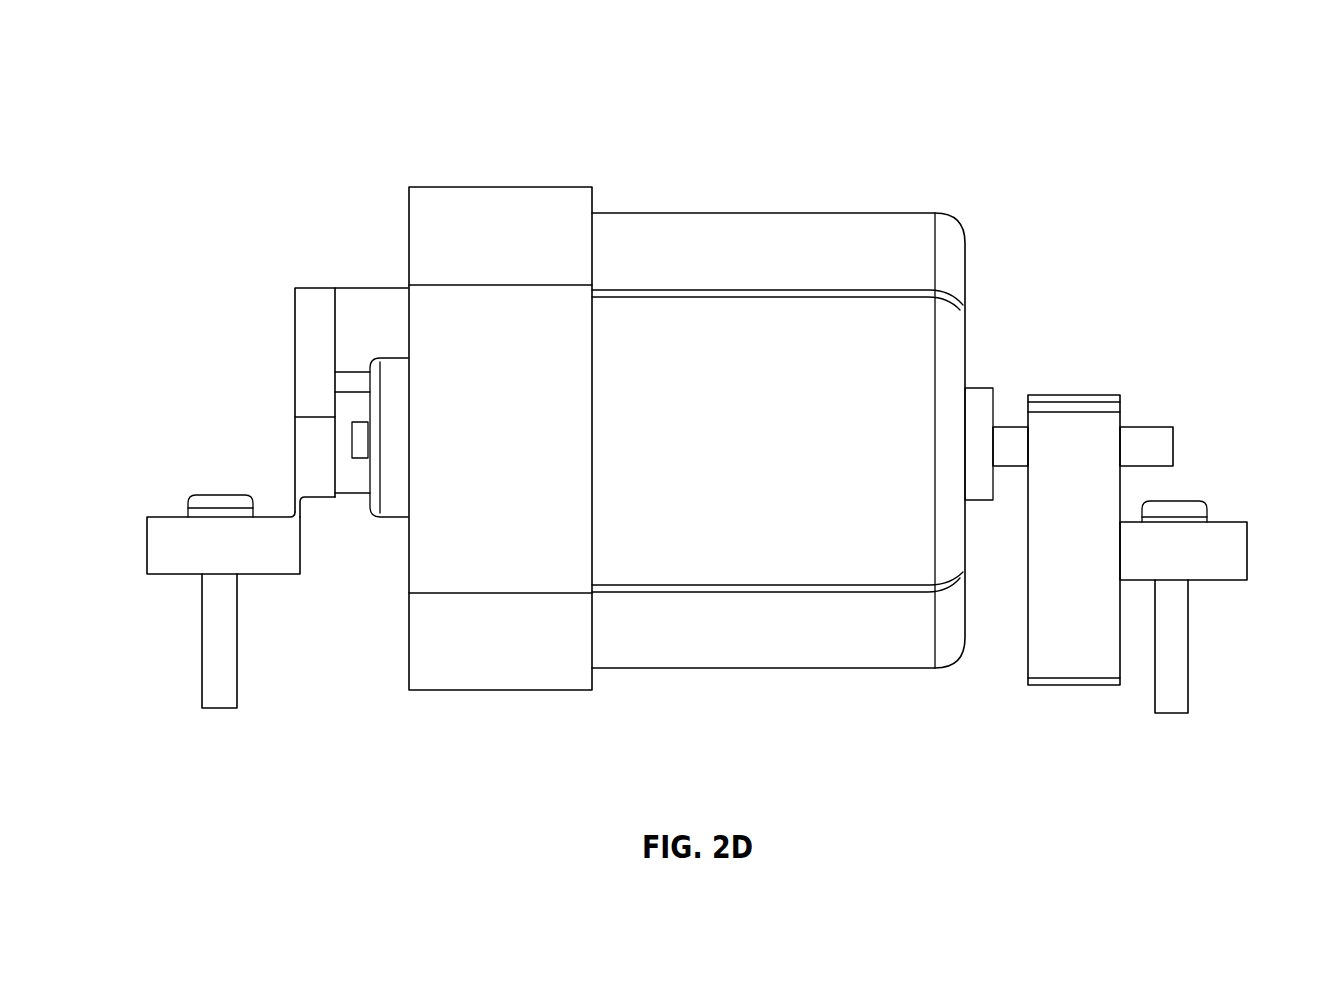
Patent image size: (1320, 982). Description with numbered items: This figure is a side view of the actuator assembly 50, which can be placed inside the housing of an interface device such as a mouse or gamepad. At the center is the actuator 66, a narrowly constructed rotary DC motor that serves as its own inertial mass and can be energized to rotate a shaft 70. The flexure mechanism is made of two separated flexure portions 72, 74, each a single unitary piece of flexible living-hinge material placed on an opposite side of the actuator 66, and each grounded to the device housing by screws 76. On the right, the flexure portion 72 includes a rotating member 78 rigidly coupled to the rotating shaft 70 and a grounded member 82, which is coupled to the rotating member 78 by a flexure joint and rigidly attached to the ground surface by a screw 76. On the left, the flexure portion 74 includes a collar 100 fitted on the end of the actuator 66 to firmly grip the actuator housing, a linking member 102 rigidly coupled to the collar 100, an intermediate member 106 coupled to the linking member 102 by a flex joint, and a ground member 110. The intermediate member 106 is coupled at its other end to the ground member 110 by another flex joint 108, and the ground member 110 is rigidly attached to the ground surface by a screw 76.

The actuator assembly 50 is at (303, 95).
The actuator 66 is at (775, 235).
The shaft 70 is at (1005, 438).
The flexure portion 72 is at (1226, 418).
The flexure portion 74 is at (226, 428).
The screw 76 is at (225, 670).
The rotating member 78 is at (1073, 428).
The grounded member 82 is at (1222, 542).
The collar 100 is at (510, 200).
The linking member 102 is at (372, 298).
The intermediate member 106 is at (312, 338).
The flex joint 108 is at (314, 508).
The ground member 110 is at (170, 528).